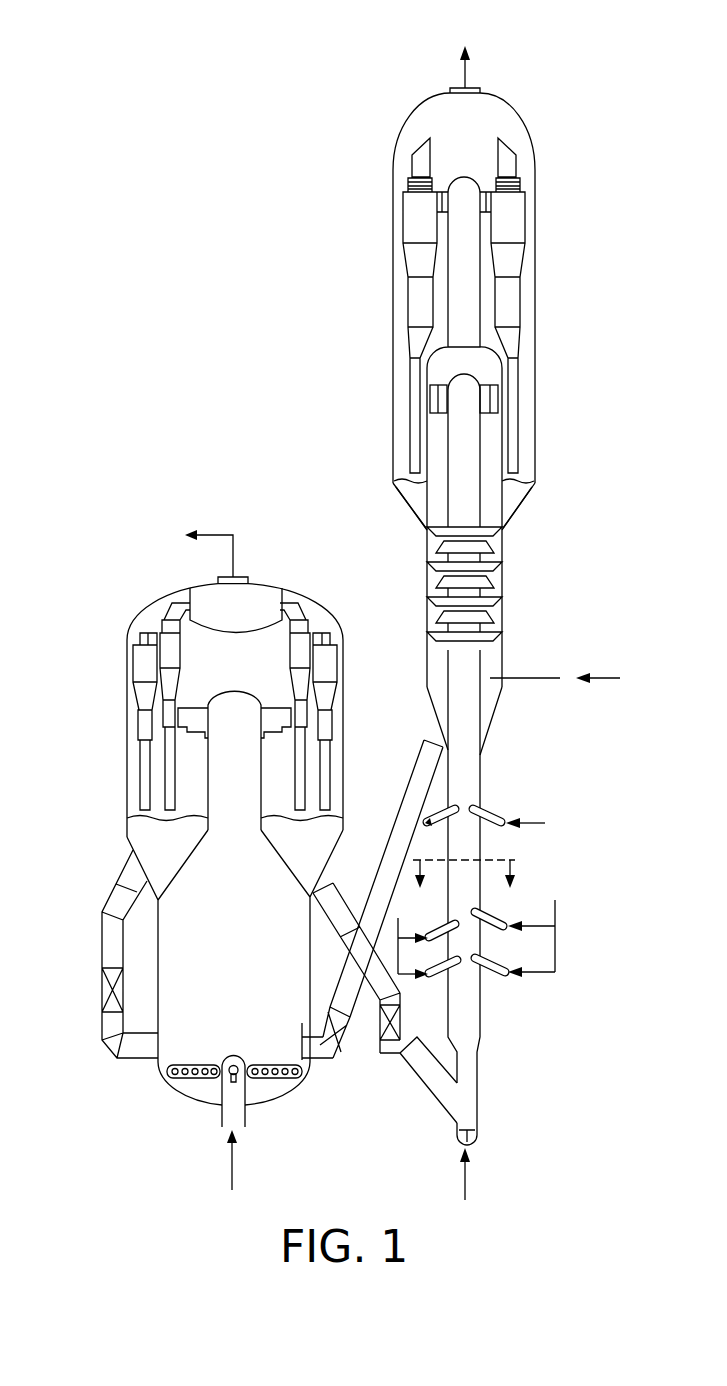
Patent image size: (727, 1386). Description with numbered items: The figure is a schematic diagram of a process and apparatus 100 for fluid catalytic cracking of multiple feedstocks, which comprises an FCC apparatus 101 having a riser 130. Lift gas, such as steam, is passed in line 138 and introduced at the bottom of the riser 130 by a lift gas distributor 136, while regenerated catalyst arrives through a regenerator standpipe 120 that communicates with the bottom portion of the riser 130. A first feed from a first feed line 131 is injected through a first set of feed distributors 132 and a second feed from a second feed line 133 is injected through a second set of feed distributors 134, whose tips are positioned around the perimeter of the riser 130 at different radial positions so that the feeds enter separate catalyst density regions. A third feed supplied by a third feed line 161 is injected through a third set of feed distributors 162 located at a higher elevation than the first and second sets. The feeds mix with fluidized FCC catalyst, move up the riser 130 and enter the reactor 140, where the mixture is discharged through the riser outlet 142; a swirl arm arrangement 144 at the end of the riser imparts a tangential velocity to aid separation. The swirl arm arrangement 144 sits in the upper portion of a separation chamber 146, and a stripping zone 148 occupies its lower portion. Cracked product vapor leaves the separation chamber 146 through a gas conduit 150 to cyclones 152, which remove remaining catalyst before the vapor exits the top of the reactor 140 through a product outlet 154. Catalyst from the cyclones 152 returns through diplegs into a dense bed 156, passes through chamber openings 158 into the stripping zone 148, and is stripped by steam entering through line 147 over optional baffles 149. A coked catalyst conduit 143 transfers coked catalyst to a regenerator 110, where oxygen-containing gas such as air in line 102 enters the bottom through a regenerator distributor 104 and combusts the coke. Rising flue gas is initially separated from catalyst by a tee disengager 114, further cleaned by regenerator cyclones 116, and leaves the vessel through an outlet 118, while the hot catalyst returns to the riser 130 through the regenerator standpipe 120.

The process and apparatus 100 is at (154, 296).
The FCC apparatus 101 is at (327, 413).
The line 102 is at (257, 1164).
The regenerator distributor 104 is at (222, 1120).
The regenerator 110 is at (190, 928).
The tee disengager 114 is at (187, 717).
The regenerator cyclones 116 is at (150, 662).
The outlet 118 is at (240, 578).
The regenerator standpipe 120 is at (384, 1010).
The riser 130 is at (480, 1072).
The first feed line 131 is at (426, 936).
The first set of feed distributors 132 is at (447, 975).
The second feed line 133 is at (555, 903).
The second set of feed distributors 134 is at (490, 978).
The lift gas distributor 136 is at (458, 1134).
The line 138 is at (464, 1172).
The reactor 140 is at (537, 273).
The riser outlet 142 is at (497, 397).
The coked catalyst conduit 143 is at (410, 805).
The swirl arm arrangement 144 is at (440, 385).
The separation chamber 146 is at (498, 440).
The line 147 is at (525, 678).
The stripping zone 148 is at (505, 553).
The baffles 149 is at (488, 618).
The gas conduit 150 is at (473, 305).
The cyclones 152 is at (410, 222).
The product outlet 154 is at (470, 80).
The dense bed 156 is at (403, 485).
The chamber openings 158 is at (428, 506).
The third feed line 161 is at (543, 823).
The third set of feed distributors 162 is at (493, 812).